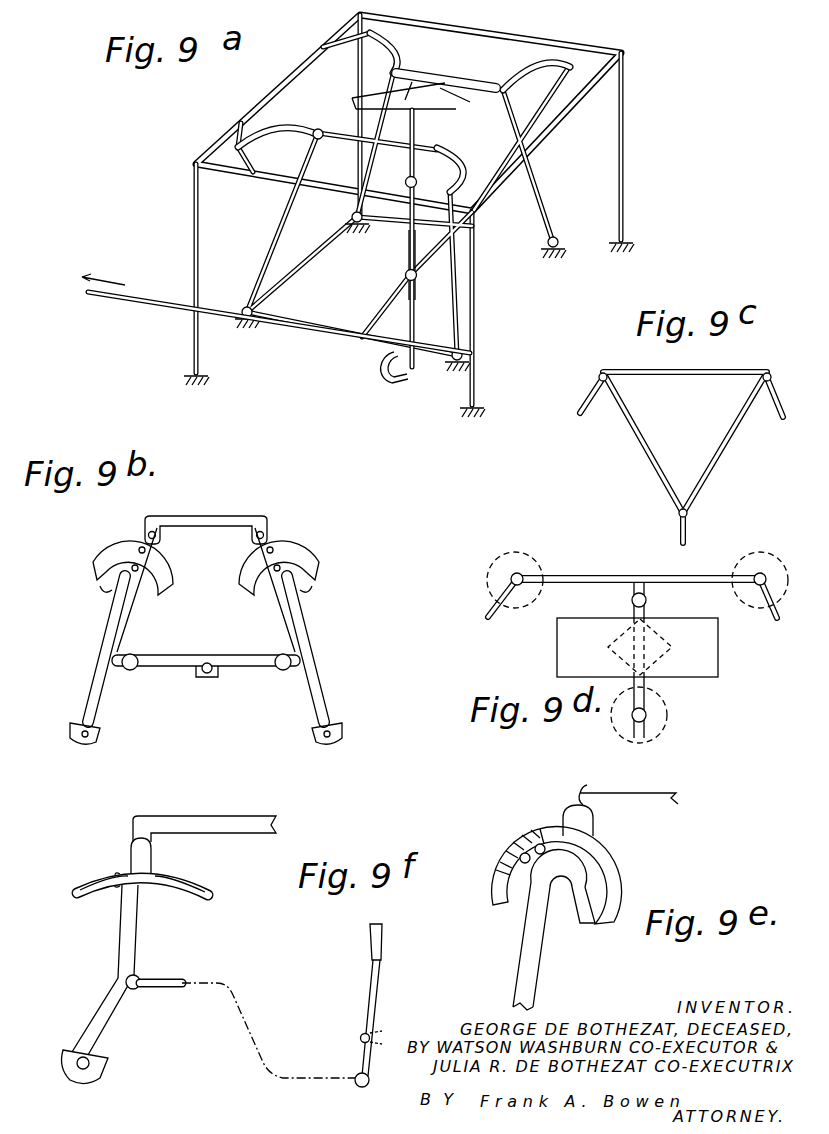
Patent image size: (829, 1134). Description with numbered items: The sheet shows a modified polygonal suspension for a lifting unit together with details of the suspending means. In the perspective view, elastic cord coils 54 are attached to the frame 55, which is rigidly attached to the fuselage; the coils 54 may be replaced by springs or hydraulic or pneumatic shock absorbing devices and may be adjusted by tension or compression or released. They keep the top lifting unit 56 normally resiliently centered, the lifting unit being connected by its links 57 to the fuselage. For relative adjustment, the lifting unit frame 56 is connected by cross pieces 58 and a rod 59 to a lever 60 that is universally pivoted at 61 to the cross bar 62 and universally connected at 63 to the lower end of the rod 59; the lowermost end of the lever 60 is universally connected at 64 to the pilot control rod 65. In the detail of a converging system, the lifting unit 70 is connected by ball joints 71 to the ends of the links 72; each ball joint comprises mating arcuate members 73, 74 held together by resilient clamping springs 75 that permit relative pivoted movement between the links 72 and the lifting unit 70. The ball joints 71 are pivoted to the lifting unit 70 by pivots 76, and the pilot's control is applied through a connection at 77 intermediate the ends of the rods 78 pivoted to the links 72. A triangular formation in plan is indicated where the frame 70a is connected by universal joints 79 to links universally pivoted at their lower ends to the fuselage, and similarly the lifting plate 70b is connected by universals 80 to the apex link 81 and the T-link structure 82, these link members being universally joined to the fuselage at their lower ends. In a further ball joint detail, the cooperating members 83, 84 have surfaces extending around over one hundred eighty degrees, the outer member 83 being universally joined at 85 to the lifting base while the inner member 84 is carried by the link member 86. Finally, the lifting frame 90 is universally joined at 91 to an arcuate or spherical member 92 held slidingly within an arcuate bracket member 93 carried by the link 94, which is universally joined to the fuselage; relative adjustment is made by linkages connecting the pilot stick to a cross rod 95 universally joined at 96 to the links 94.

In FIG. 9A, the elastic cord coils 54 is at (395, 60).
In FIG. 9A, the frame 55 is at (334, 48).
In FIG. 9A, the top lifting unit 56 is at (430, 80).
In FIG. 9A, the links 57 is at (388, 90).
In FIG. 9A, the cross pieces 58 is at (440, 96).
In FIG. 9A, the rod 59 is at (416, 134).
In FIG. 9A, the lever 60 is at (407, 253).
In FIG. 9A, the universal pivot 61 is at (404, 278).
In FIG. 9A, the cross bar 62 is at (372, 312).
In FIG. 9A, the universal connection 63 is at (392, 179).
In FIG. 9A, the universal connection 64 is at (389, 384).
In FIG. 9A, the pilot control rod 65 is at (310, 345).
In FIG. 9B, the lifting unit 70 is at (208, 518).
In FIG. 9C, the frame 70a is at (684, 366).
In FIG. 9D, the lifting plate 70b is at (556, 653).
In FIG. 9B, the ball joints 71 is at (240, 566).
In FIG. 9B, the links 72 is at (88, 690).
In FIG. 9B, the arcuate member 73 is at (103, 551).
In FIG. 9B, the arcuate member 74 is at (106, 590).
In FIG. 9B, the resilient clamping springs 75 is at (146, 552).
In FIG. 9B, the pivots 76 is at (146, 532).
In FIG. 9B, the connection 77 is at (205, 680).
In FIG. 9B, the rods 78 is at (160, 655).
In FIG. 9C, the universal joints 79 is at (590, 392).
In FIG. 9D, the universals 80 is at (648, 601).
In FIG. 9D, the apex link 81 is at (646, 733).
In FIG. 9D, the T-link structure 82 is at (590, 572).
In FIG. 9E, the outer member 83 is at (612, 880).
In FIG. 9E, the inner member 84 is at (588, 930).
In FIG. 9E, the universal joint 85 is at (590, 822).
In FIG. 9E, the link member 86 is at (530, 940).
In FIG. 9F, the lifting frame 90 is at (205, 815).
In FIG. 9F, the universal joint 91 is at (154, 853).
In FIG. 9F, the arcuate or spherical member 92 is at (120, 870).
In FIG. 9F, the arcuate bracket member 93 is at (212, 882).
In FIG. 9F, the link 94 is at (138, 932).
In FIG. 9F, the cross rod 95 is at (172, 976).
In FIG. 9F, the universal joint 96 is at (134, 992).